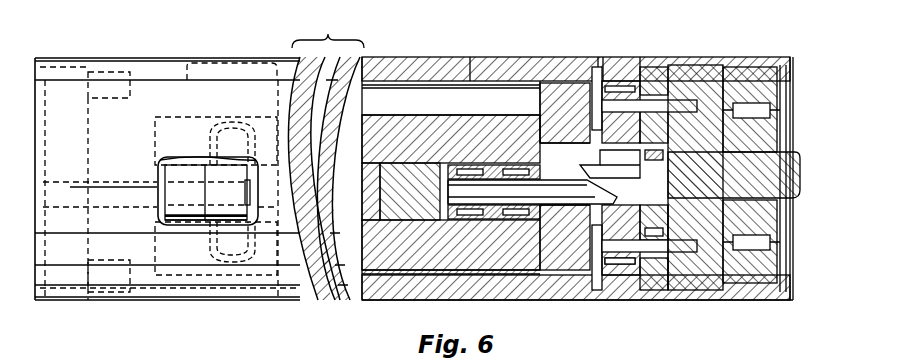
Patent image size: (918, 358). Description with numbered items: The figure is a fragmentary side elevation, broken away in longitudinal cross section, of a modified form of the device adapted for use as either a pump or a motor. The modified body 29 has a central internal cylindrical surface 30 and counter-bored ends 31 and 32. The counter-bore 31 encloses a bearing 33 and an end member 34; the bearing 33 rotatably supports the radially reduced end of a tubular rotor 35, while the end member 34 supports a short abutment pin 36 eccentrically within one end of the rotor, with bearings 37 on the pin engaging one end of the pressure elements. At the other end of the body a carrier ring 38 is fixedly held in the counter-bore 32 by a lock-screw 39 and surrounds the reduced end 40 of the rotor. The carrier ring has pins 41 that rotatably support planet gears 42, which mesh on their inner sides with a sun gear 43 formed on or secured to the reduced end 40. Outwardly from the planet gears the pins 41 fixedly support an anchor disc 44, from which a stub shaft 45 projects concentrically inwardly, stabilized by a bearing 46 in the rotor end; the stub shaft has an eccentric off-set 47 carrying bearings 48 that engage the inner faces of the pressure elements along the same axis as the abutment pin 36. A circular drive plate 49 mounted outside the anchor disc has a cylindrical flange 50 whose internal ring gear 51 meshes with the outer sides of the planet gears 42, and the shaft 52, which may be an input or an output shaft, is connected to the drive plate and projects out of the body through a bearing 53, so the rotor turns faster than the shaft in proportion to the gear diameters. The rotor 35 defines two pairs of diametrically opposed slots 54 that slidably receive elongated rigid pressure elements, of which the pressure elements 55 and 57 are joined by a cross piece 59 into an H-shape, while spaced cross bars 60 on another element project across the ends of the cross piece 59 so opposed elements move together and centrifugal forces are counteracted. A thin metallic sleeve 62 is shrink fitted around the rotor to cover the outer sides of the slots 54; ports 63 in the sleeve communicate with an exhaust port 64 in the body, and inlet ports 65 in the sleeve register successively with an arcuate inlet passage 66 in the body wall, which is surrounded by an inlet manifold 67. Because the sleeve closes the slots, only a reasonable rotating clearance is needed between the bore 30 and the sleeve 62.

The modified body 29 is at (140, 62).
The central internal cylindrical surface 30 is at (403, 78).
The counter-bore 31 is at (70, 66).
The counter-bore 32 is at (682, 78).
The bearing 33 is at (103, 100).
The end member 34 is at (88, 143).
The tubular rotor 35 is at (550, 100).
The abutment pin 36 is at (160, 198).
The bearings 37 is at (186, 217).
The carrier ring 38 is at (610, 82).
The lock-screw 39 is at (615, 60).
The reduced end of the rotor 40 is at (610, 133).
The pins 41 is at (677, 243).
The planet gears 42 is at (653, 268).
The sun gear 43 is at (590, 185).
The anchor disc 44 is at (693, 223).
The stub shaft 45 is at (692, 157).
The bearing 46 is at (748, 115).
The eccentric off-set 47 is at (553, 190).
The bearings 48 is at (513, 219).
The circular drive plate 49 is at (730, 65).
The cylindrical flange 50 is at (713, 100).
The internal ring gear 51 is at (652, 82).
The shaft 52 is at (782, 193).
The bearing 53 is at (763, 243).
The slots 54 is at (485, 97).
The pressure element 55 is at (425, 125).
The pressure element 57 is at (405, 258).
The cross piece 59 is at (388, 112).
The cross bars 60 is at (415, 210).
The metallic sleeve 62 is at (405, 80).
The ports 63 is at (462, 85).
The exhaust port 64 is at (472, 65).
The inlet ports 65 is at (306, 345).
The arcuate inlet passage 66 is at (235, 125).
The inlet manifold 67 is at (185, 300).